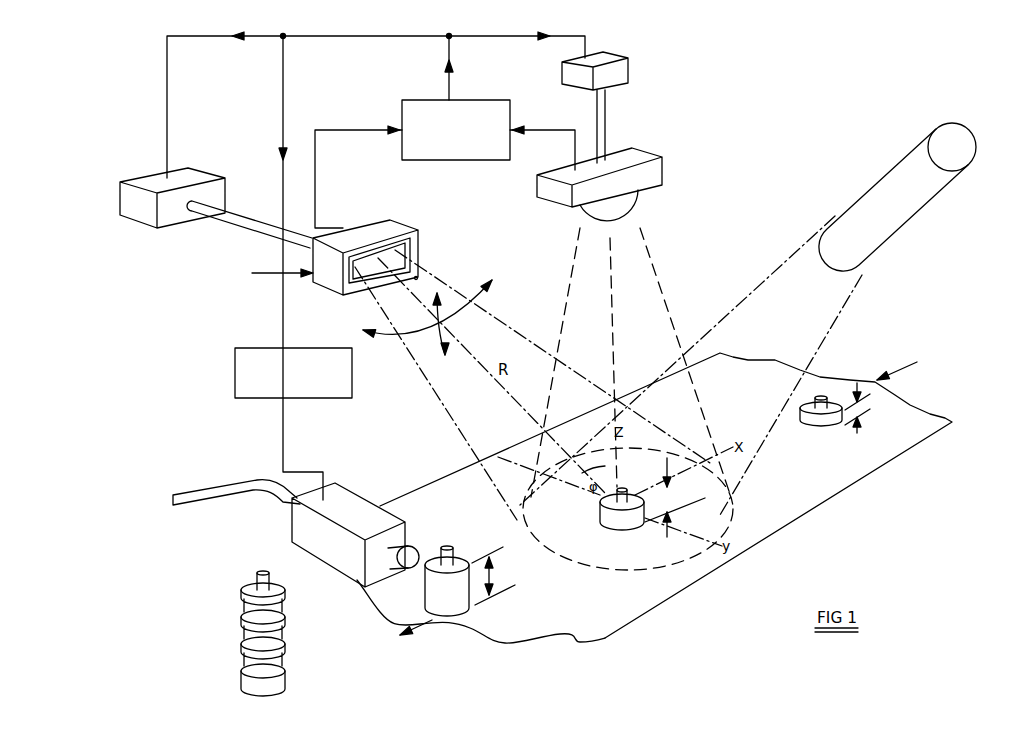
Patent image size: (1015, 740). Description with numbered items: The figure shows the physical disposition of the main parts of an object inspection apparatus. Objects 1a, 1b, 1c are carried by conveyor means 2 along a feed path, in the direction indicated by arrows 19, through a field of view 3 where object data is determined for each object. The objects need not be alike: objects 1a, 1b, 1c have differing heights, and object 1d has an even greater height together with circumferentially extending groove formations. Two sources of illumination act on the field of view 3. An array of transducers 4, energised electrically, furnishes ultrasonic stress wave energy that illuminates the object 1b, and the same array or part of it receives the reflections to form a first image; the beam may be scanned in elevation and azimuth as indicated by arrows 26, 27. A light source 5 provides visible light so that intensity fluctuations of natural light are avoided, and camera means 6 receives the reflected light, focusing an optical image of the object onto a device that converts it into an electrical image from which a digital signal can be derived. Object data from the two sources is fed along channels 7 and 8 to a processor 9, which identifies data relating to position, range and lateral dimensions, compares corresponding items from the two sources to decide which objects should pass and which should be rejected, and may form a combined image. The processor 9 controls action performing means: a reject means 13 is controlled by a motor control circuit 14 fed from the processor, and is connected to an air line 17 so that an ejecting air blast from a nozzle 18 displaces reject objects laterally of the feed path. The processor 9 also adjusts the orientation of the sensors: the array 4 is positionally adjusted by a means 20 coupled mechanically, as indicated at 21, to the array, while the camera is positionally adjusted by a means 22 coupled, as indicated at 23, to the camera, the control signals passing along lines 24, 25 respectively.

The object 1a is at (823, 398).
The object 1b is at (628, 490).
The object 1c is at (450, 547).
The object 1d is at (275, 580).
The conveyor means 2 is at (943, 418).
The field of view 3 is at (733, 528).
The array of transducers 4 is at (374, 228).
The light source 5 is at (857, 196).
The camera means 6 is at (655, 156).
The channel 7 is at (338, 130).
The channel 8 is at (552, 128).
The processor 9 is at (477, 100).
The reject means 13 is at (347, 566).
The motor control circuit 14 is at (235, 374).
The air line 17 is at (216, 496).
The nozzle 18 is at (388, 562).
The arrows 19 is at (420, 625).
The positional adjusting means 20 is at (119, 212).
The mechanical coupling 21 is at (212, 213).
The positional adjusting means 22 is at (632, 67).
The coupling 23 is at (605, 118).
The control line 24 is at (226, 33).
The control line 25 is at (468, 33).
The scanning arrow 26 is at (485, 293).
The scanning arrow 27 is at (440, 332).